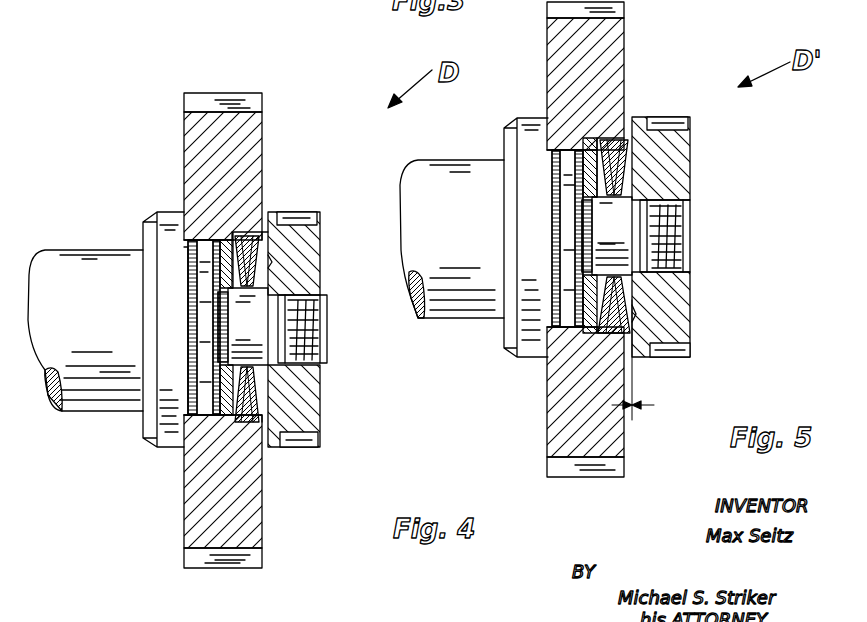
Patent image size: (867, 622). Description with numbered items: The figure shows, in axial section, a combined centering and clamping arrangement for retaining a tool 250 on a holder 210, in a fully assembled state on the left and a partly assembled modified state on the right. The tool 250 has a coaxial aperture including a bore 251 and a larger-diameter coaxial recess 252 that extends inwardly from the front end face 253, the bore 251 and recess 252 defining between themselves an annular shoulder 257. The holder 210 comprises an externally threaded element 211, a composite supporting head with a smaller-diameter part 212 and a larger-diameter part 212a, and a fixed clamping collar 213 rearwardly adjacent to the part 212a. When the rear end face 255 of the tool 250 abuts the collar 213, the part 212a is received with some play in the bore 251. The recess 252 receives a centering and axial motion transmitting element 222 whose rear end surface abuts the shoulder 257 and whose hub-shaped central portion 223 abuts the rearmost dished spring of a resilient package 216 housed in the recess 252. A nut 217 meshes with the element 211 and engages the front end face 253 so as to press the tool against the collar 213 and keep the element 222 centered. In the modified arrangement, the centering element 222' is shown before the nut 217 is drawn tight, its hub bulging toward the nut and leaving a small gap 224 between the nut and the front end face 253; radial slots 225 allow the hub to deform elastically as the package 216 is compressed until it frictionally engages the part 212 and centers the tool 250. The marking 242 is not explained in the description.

In FIG. 4, the holder 210 is at (86, 252).
In FIG. 5, the holder 210 is at (440, 160).
In FIG. 4, the externally threaded element 211 is at (300, 342).
In FIG. 5, the externally threaded element 211 is at (680, 246).
In FIG. 4, the smaller-diameter part 212 is at (230, 332).
In FIG. 4, the larger-diameter part 212a is at (200, 300).
In FIG. 5, the larger-diameter part 212a is at (565, 208).
In FIG. 4, the clamping collar 213 is at (149, 238).
In FIG. 5, the clamping collar 213 is at (526, 128).
In FIG. 4, the resilient package 216 is at (268, 262).
In FIG. 5, the resilient package 216 is at (634, 314).
In FIG. 4, the nut 217 is at (314, 282).
In FIG. 5, the nut 217 is at (688, 186).
In FIG. 4, the centering and axial motion transmitting element 222 is at (278, 232).
In FIG. 5, the centering element 222' is at (566, 264).
In FIG. 4, the hub-shaped central portion 223 is at (243, 326).
In FIG. 5, the hub-shaped central portion 223 is at (607, 236).
In FIG. 5, the gap 224 is at (636, 408).
In FIG. 5, the radial slots 225 is at (602, 284).
In FIG. 5, the clutch member 242 is at (611, 235).
In FIG. 4, the tool 250 is at (232, 94).
In FIG. 4, the bore 251 is at (188, 445).
In FIG. 4, the coaxial recess 252 is at (262, 428).
In FIG. 5, the coaxial recess 252 is at (622, 136).
In FIG. 4, the front end face 253 is at (262, 150).
In FIG. 5, the front end face 253 is at (624, 95).
In FIG. 4, the rear end face 255 is at (184, 150).
In FIG. 5, the rear end face 255 is at (547, 72).
In FIG. 4, the annular shoulder 257 is at (215, 238).